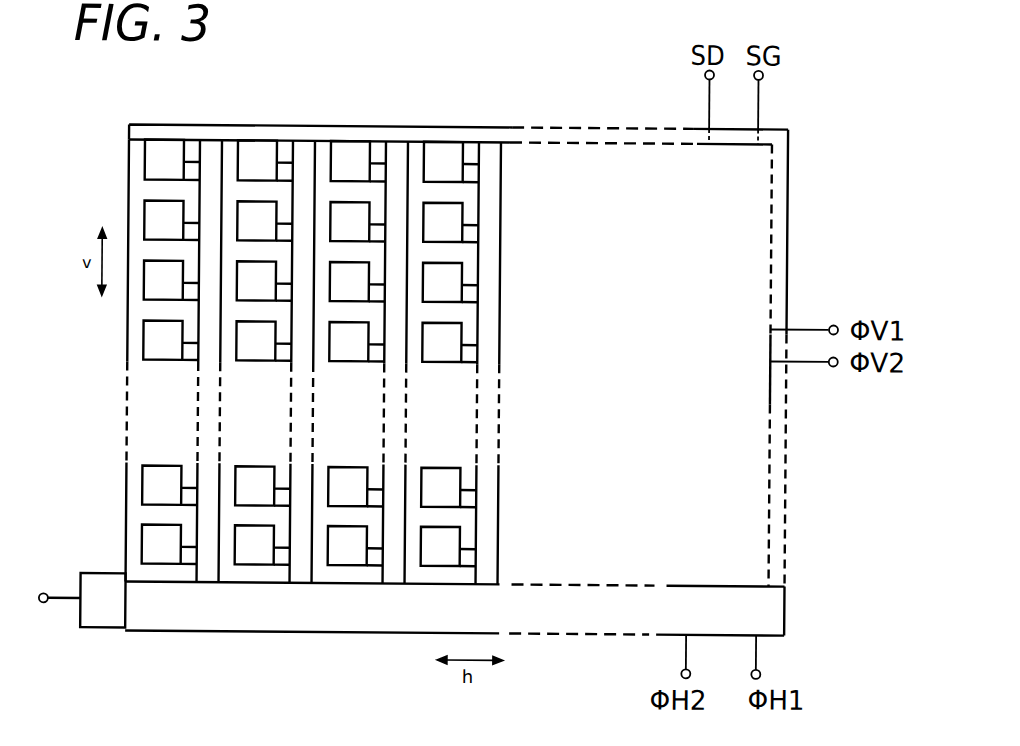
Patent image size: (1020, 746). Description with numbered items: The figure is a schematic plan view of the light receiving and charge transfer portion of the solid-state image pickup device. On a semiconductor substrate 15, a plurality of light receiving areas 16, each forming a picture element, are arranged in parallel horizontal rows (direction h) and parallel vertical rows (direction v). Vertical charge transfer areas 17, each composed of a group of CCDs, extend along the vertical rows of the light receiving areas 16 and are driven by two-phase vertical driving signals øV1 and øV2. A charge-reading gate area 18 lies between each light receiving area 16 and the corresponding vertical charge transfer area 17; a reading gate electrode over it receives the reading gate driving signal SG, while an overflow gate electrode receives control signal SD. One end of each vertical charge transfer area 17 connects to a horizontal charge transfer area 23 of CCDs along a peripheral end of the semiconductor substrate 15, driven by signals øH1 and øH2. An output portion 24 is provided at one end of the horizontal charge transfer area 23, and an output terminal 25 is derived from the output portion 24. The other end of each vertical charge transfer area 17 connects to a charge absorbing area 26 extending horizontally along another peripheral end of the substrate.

The semiconductor substrate 15 is at (428, 125).
The light receiving areas 16 is at (173, 213).
The vertical charge transfer areas 17 is at (216, 199).
The charge-reading gate area 18 is at (384, 231).
The horizontal charge transfer area 23 is at (262, 612).
The output portion 24 is at (111, 618).
The output terminal 25 is at (47, 593).
The charge absorbing area 26 is at (478, 135).